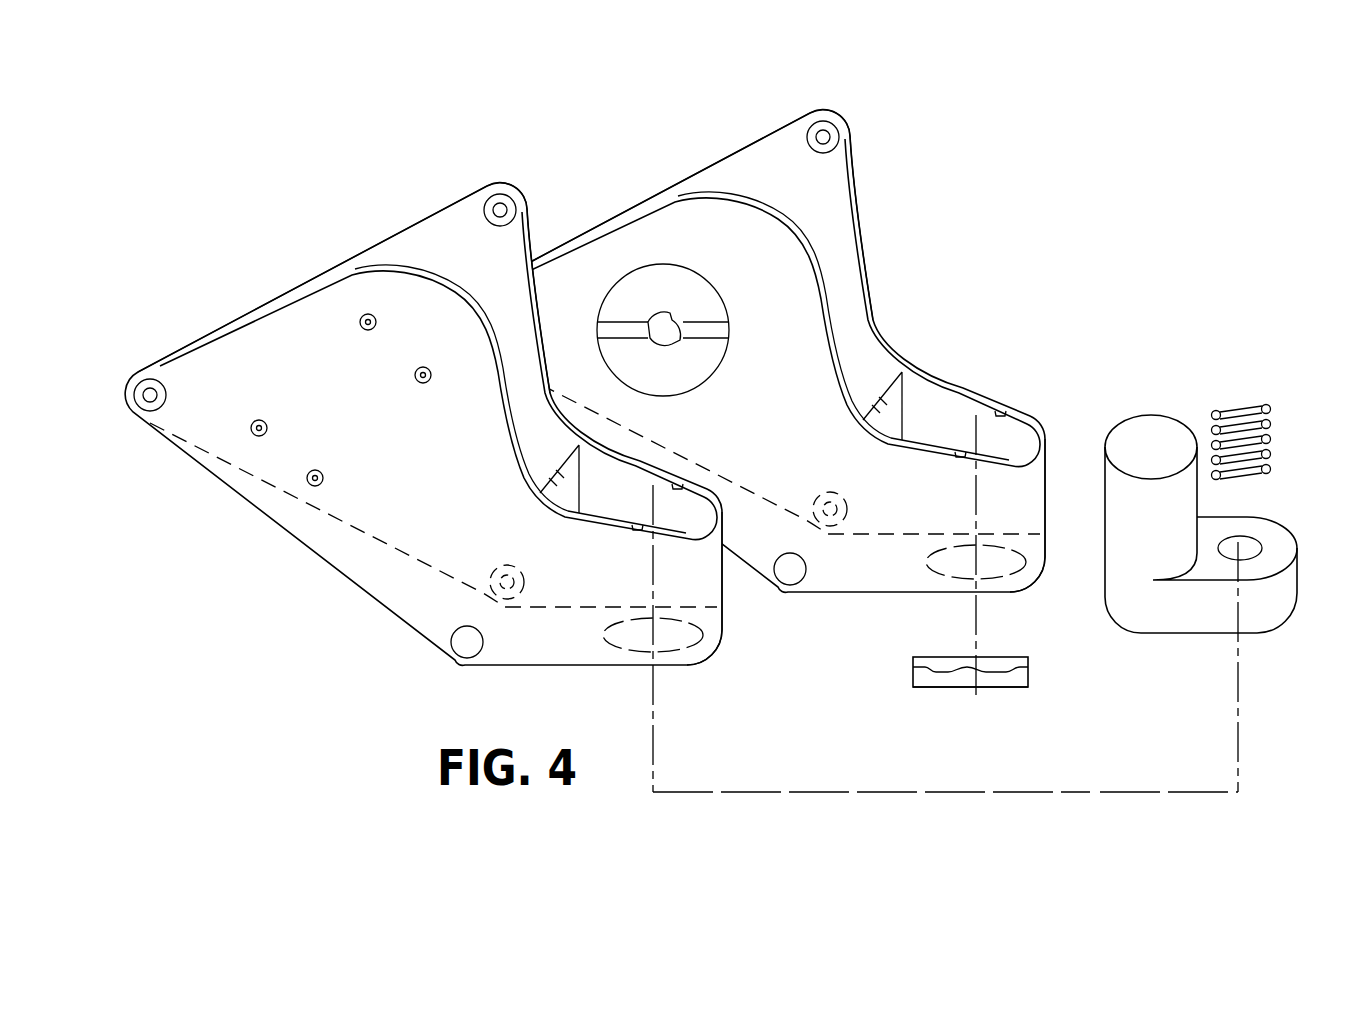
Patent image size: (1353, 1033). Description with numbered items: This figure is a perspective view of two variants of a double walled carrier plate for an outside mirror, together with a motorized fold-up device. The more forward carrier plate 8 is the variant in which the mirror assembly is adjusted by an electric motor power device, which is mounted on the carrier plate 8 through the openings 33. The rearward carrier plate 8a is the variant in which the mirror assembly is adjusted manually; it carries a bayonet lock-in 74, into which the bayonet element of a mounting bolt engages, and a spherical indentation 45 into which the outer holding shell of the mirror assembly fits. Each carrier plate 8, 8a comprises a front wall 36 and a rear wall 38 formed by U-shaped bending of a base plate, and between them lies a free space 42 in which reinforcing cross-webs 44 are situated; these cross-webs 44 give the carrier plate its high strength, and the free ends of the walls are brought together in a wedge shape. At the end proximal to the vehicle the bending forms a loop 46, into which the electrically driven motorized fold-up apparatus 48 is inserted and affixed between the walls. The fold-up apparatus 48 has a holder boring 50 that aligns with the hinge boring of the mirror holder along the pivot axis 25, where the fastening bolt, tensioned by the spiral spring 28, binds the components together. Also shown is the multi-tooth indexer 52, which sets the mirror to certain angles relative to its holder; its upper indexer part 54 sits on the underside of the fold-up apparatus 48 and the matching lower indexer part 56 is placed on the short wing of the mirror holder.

The double walled carrier plate 8 is at (338, 162).
The double walled carrier plate 8a is at (709, 120).
The pivot axis 25 is at (653, 570).
The spiral spring 28 is at (1273, 423).
The openings 33 is at (316, 469).
The front wall 36 is at (723, 230).
The rear wall 38 is at (345, 273).
The free space 42 is at (474, 199).
The cross-webs 44 is at (560, 480).
The spherical indentation 45 is at (683, 353).
The loop 46 is at (620, 647).
The motorized fold-up apparatus 48 is at (1263, 607).
The holder boring 50 is at (1250, 537).
The multi-tooth indexer 52 is at (908, 716).
The upper indexer part 54 is at (940, 658).
The lower indexer part 56 is at (1020, 682).
The bayonet lock-in 74 is at (673, 320).